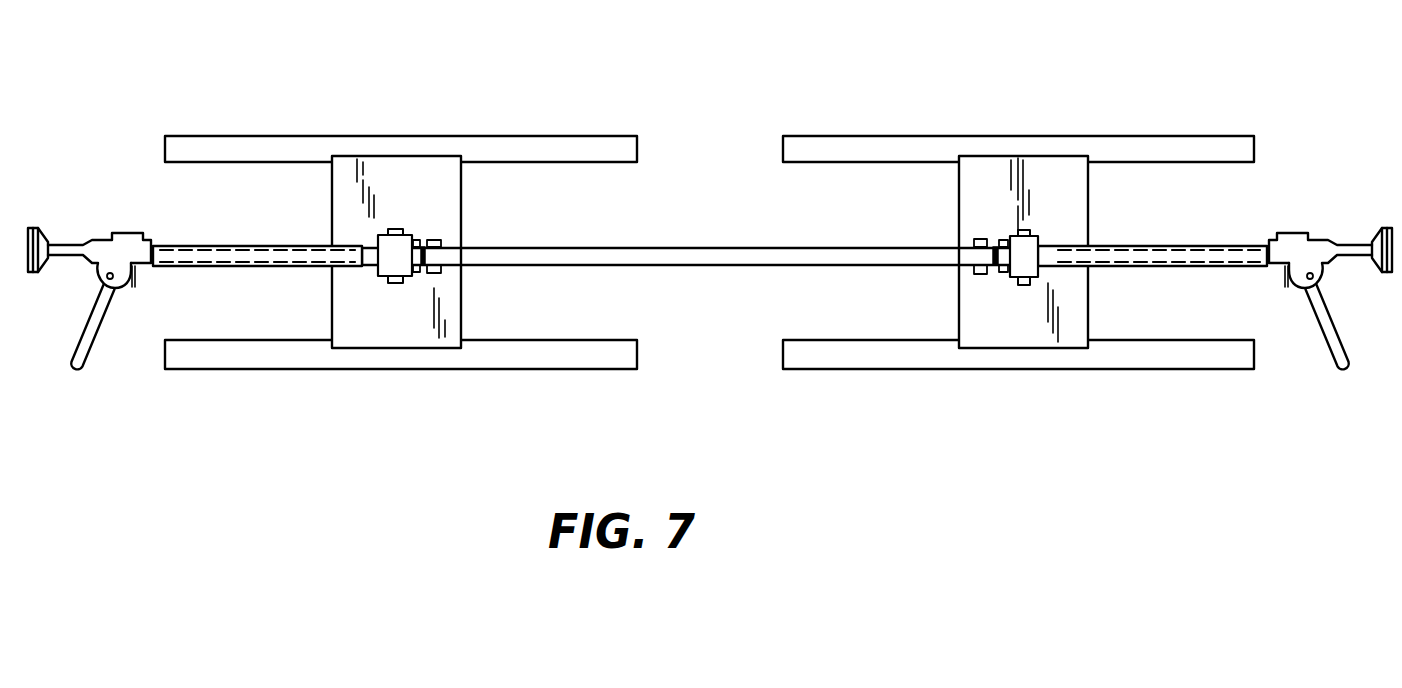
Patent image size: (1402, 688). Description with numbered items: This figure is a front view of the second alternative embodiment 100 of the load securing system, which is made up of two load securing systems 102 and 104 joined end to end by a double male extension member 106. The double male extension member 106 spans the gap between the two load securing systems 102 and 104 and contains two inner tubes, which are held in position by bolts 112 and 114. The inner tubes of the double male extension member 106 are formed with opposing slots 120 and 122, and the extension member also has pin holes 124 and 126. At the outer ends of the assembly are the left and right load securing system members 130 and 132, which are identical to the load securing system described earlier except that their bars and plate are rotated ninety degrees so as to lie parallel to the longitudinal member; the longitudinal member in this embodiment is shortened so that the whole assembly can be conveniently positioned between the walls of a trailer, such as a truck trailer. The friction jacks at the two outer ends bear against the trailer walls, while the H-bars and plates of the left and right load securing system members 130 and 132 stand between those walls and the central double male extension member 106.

The second alternative embodiment 100 is at (594, 70).
The load securing system 102 is at (192, 255).
The load securing system 104 is at (1214, 248).
The double male extension member 106 is at (626, 247).
The bolt 112 is at (393, 229).
The bolt 114 is at (1022, 286).
The slot 120 is at (977, 237).
The slot 122 is at (982, 268).
The pin hole 124 is at (437, 272).
The pin hole 126 is at (422, 246).
The left load securing system member 130 is at (407, 330).
The right load securing system member 132 is at (1073, 335).